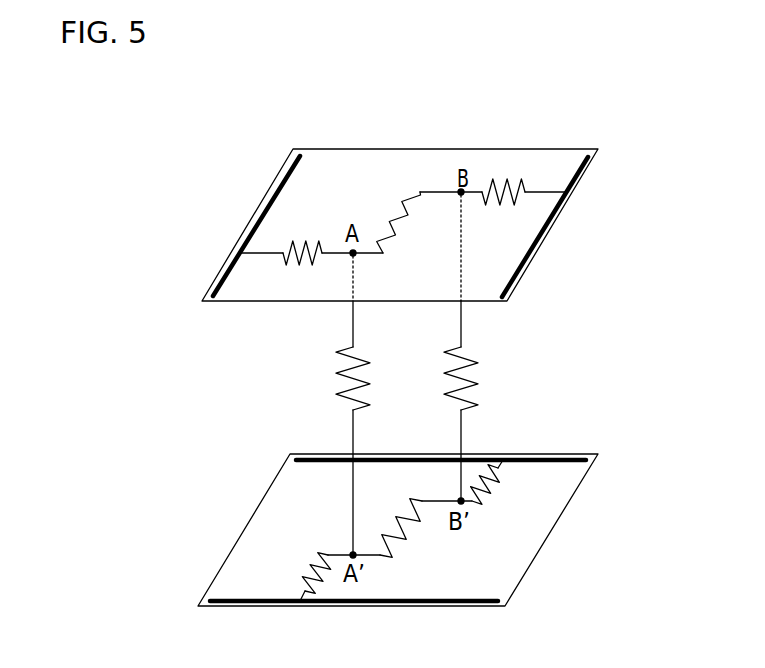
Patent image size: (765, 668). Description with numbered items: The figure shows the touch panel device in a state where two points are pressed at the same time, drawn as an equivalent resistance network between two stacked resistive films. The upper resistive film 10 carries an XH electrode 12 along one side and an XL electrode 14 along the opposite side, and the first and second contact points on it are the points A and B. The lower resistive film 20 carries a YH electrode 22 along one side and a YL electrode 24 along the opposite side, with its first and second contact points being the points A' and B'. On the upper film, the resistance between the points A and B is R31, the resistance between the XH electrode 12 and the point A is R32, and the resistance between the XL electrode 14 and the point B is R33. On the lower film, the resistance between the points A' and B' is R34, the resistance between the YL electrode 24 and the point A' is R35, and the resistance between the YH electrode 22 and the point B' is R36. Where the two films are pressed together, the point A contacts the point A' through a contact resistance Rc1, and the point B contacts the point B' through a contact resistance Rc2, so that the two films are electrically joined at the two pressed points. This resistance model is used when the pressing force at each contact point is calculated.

The resistive film 10 is at (360, 149).
The XH electrode 12 is at (258, 208).
The XL electrode 14 is at (552, 225).
The resistive film 20 is at (258, 510).
The YH electrode 22 is at (570, 458).
The YL electrode 24 is at (442, 603).
The resistance between points A and B R31 is at (407, 222).
The resistance between XH electrode and point A R32 is at (297, 240).
The resistance between XL electrode and point B R33 is at (513, 180).
The resistance between points A' and B' R34 is at (407, 520).
The resistance between YL electrode and point A' R35 is at (309, 577).
The resistance between YH electrode and point B' R36 is at (503, 484).
The contact resistance Rc1 is at (326, 428).
The contact resistance Rc2 is at (486, 401).